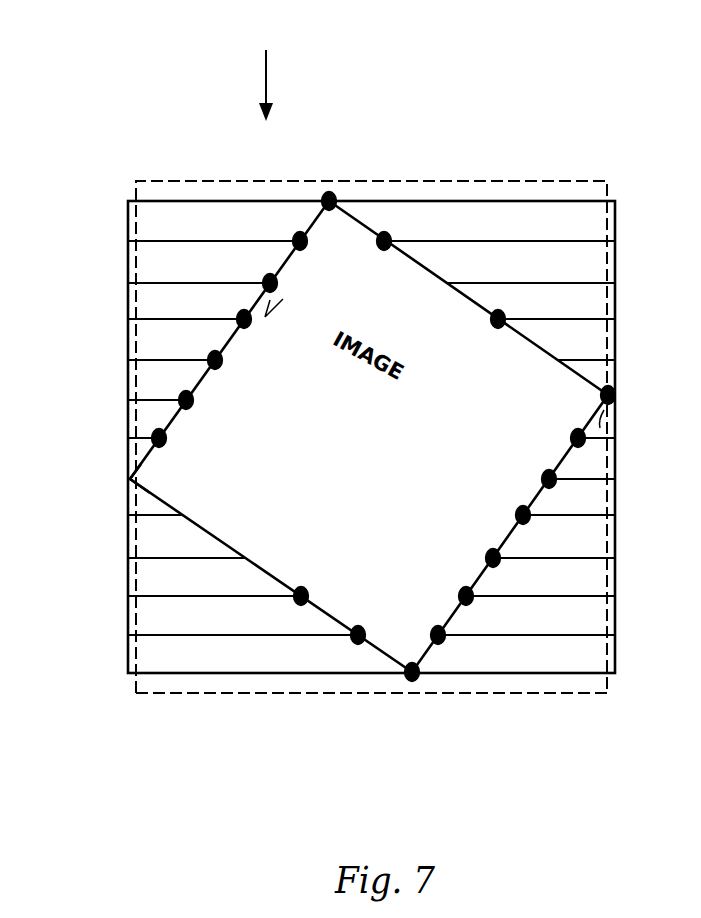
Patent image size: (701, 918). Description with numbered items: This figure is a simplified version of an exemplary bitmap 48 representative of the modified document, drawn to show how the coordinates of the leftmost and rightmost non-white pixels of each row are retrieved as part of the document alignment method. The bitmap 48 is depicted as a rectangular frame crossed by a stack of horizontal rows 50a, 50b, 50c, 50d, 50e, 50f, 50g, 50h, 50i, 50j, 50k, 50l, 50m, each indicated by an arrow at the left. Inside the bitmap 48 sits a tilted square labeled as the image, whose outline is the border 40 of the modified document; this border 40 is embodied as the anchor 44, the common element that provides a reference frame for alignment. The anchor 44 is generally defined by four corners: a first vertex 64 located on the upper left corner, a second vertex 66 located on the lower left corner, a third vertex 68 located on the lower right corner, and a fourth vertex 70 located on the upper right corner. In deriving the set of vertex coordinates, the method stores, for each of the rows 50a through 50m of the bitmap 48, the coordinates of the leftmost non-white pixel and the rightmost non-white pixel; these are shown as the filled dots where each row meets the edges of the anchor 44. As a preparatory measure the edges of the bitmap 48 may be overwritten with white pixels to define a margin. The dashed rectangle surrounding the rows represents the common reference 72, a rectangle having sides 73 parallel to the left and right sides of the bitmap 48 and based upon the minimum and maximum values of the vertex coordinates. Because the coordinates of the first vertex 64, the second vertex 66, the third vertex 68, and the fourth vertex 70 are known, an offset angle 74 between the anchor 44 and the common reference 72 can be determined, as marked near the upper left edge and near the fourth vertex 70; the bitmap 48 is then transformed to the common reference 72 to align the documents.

The border 40 is at (369, 371).
The first anchor 44 is at (363, 223).
The bitmap 48 is at (265, 75).
The row 50a is at (112, 206).
The row 50b is at (112, 246).
The row 50c is at (112, 288).
The row 50d is at (112, 324).
The row 50e is at (112, 365).
The row 50f is at (112, 405).
The row 50g is at (112, 443).
The row 50h is at (112, 495).
The row 50i is at (112, 520).
The row 50j is at (112, 563).
The row 50k is at (112, 601).
The row 50l is at (112, 640).
The row 50m is at (112, 678).
The first vertex 64 is at (329, 201).
The second vertex 66 is at (130, 480).
The third vertex 68 is at (412, 672).
The fourth vertex 70 is at (610, 395).
The common reference 72 is at (358, 694).
The sides 73 is at (136, 693).
The offset angle 74 is at (265, 317).